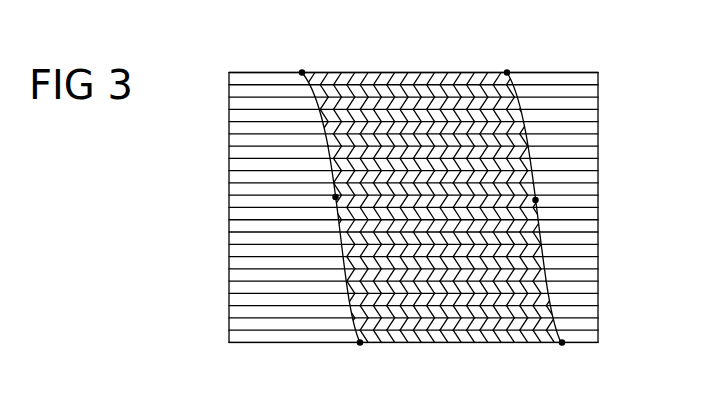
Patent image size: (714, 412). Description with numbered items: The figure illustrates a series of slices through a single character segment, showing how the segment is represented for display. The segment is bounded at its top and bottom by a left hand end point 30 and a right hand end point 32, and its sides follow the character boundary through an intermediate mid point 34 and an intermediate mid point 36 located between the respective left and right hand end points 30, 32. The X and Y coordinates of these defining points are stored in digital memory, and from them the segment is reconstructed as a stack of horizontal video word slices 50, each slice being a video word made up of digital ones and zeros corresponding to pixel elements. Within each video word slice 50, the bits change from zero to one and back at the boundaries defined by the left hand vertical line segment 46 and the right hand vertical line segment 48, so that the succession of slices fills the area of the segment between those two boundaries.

The left hand end point 30 is at (302, 72).
The right hand end point 32 is at (507, 72).
The intermediate mid point 34 is at (335, 197).
The intermediate mid point 36 is at (535, 200).
The left hand vertical line segment 46 is at (330, 145).
The right hand vertical line segment 48 is at (527, 118).
The video word slice 50 is at (598, 92).